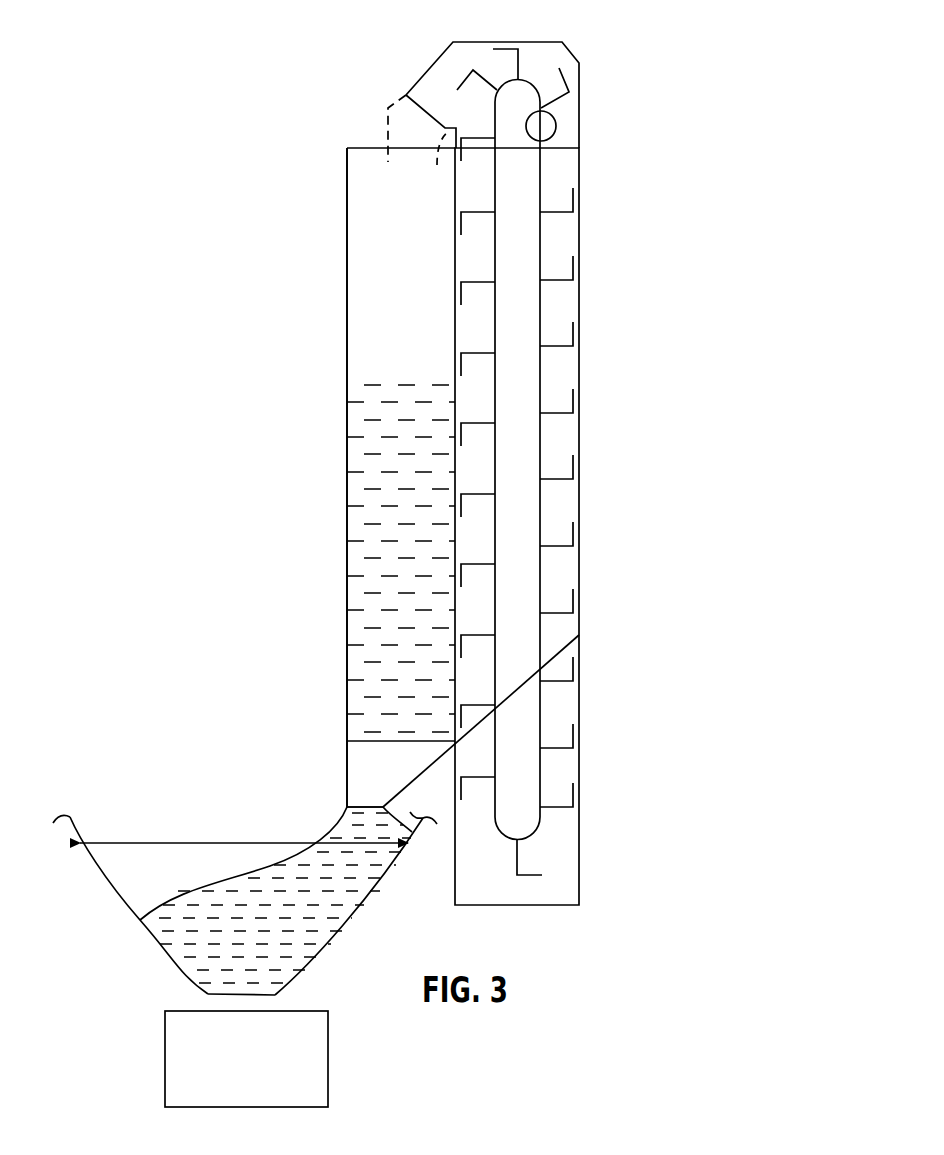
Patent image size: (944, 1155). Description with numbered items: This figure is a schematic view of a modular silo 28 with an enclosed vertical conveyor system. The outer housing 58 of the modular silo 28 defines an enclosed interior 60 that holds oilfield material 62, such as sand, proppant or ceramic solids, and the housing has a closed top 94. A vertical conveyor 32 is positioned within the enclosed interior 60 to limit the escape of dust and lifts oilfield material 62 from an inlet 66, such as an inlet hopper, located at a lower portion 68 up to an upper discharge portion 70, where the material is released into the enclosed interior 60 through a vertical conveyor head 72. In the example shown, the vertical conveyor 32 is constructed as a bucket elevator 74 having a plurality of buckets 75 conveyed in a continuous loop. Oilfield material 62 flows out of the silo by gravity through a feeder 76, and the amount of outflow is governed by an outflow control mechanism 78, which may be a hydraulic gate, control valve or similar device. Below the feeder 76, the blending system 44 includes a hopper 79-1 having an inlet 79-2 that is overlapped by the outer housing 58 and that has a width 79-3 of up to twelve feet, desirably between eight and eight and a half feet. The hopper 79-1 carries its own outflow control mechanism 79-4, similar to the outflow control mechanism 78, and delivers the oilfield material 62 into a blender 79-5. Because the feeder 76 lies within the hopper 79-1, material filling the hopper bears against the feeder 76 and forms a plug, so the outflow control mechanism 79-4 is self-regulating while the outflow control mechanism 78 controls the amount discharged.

The modular silo 28 is at (328, 182).
The vertical conveyor 32 is at (583, 265).
The blending system 44 is at (223, 770).
The outer housing 58 is at (347, 580).
The enclosed interior 60 is at (358, 297).
The oilfield material 62 is at (385, 385).
The inlet 66 is at (596, 855).
The lower portion 68 is at (612, 765).
The upper discharge portion 70 is at (623, 137).
The vertical conveyor head 72 is at (442, 82).
The bucket elevator 74 is at (545, 564).
The buckets 75 is at (558, 348).
The feeder 76 is at (343, 752).
The outflow control mechanism 78 is at (345, 788).
The closed top 94 is at (380, 148).
The hopper 79-1 is at (158, 923).
The inlet 79-2 is at (77, 822).
The width 79-3 is at (128, 843).
The outflow control mechanism 79-4 is at (275, 998).
The blender 79-5 is at (317, 1060).